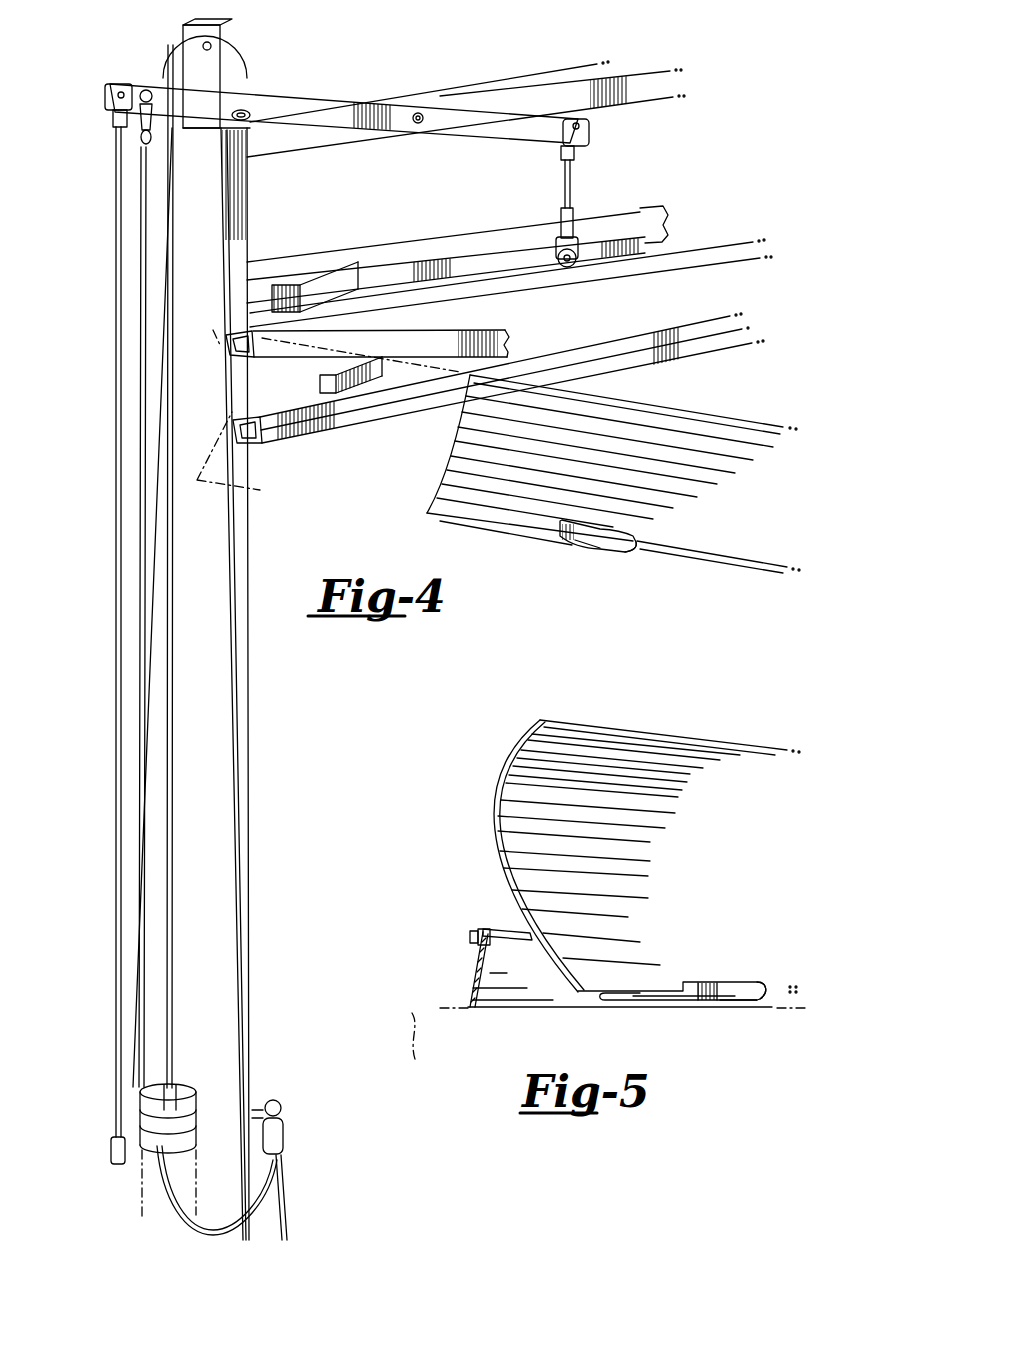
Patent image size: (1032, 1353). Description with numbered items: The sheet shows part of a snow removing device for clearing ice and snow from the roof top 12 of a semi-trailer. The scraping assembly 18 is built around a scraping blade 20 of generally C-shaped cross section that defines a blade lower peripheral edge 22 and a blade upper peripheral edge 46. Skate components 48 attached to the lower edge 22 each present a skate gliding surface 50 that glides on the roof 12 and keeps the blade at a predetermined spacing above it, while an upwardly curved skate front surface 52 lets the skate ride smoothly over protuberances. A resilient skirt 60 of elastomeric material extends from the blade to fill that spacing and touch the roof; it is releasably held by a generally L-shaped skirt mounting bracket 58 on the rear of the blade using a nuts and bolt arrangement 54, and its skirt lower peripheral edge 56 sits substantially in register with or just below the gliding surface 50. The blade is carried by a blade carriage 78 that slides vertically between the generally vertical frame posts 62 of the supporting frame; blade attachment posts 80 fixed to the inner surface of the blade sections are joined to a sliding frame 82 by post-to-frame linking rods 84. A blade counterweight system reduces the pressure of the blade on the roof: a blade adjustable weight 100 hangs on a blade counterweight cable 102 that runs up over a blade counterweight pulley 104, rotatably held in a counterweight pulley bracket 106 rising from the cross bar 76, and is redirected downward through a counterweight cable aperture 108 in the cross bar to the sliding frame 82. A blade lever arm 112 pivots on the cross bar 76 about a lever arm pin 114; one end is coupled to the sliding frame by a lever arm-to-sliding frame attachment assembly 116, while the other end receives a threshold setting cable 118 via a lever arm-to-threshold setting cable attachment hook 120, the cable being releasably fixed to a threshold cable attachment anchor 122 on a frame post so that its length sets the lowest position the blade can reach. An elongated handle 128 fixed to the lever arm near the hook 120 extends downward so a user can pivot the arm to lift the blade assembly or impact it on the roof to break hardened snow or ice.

In FIG. 5, the roof top 12 is at (603, 1053).
In FIG. 5, the scraping assembly 18 is at (622, 883).
In FIG. 4, the scraping blade 20 is at (486, 448).
In FIG. 5, the scraping blade 20 is at (630, 817).
In FIG. 4, the blade lower peripheral edge 22 is at (466, 519).
In FIG. 5, the blade lower peripheral edge 22 is at (603, 993).
In FIG. 4, the blade upper peripheral edge 46 is at (596, 456).
In FIG. 5, the blade upper peripheral edge 46 is at (647, 829).
In FIG. 4, the skate component 48 is at (562, 549).
In FIG. 5, the skate component 48 is at (721, 1001).
In FIG. 4, the skate gliding surface 50 is at (574, 558).
In FIG. 5, the skate gliding surface 50 is at (746, 1009).
In FIG. 4, the skate front surface 52 is at (614, 549).
In FIG. 5, the skate front surface 52 is at (772, 997).
In FIG. 5, the nuts and bolt arrangement 54 is at (460, 932).
In FIG. 5, the skirt lower peripheral edge 56 is at (523, 1009).
In FIG. 5, the skirt mounting bracket 58 is at (486, 929).
In FIG. 5, the resilient skirt 60 is at (476, 972).
In FIG. 4, the frame post 62 is at (187, 288).
In FIG. 4, the cross bar 76 is at (490, 85).
In FIG. 4, the blade carriage 78 is at (499, 300).
In FIG. 4, the blade attachment post 80 is at (640, 358).
In FIG. 4, the sliding frame 82 is at (497, 228).
In FIG. 4, the post-to-frame linking rod 84 is at (366, 378).
In FIG. 4, the blade adjustable weight 100 is at (205, 1105).
In FIG. 4, the blade counterweight cable 102 is at (175, 957).
In FIG. 4, the blade counterweight pulley 104 is at (233, 72).
In FIG. 4, the counterweight pulley bracket 106 is at (217, 53).
In FIG. 4, the counterweight cable aperture 108 is at (241, 110).
In FIG. 4, the blade lever arm 112 is at (335, 98).
In FIG. 4, the lever arm pin 114 is at (419, 113).
In FIG. 4, the lever arm-to-sliding frame attachment assembly 116 is at (582, 197).
In FIG. 4, the threshold setting cable 118 is at (142, 655).
In FIG. 4, the lever arm-to-threshold setting cable attachment hook 120 is at (148, 88).
In FIG. 4, the threshold cable attachment anchor 122 is at (282, 1108).
In FIG. 4, the elongated handle 128 is at (112, 936).